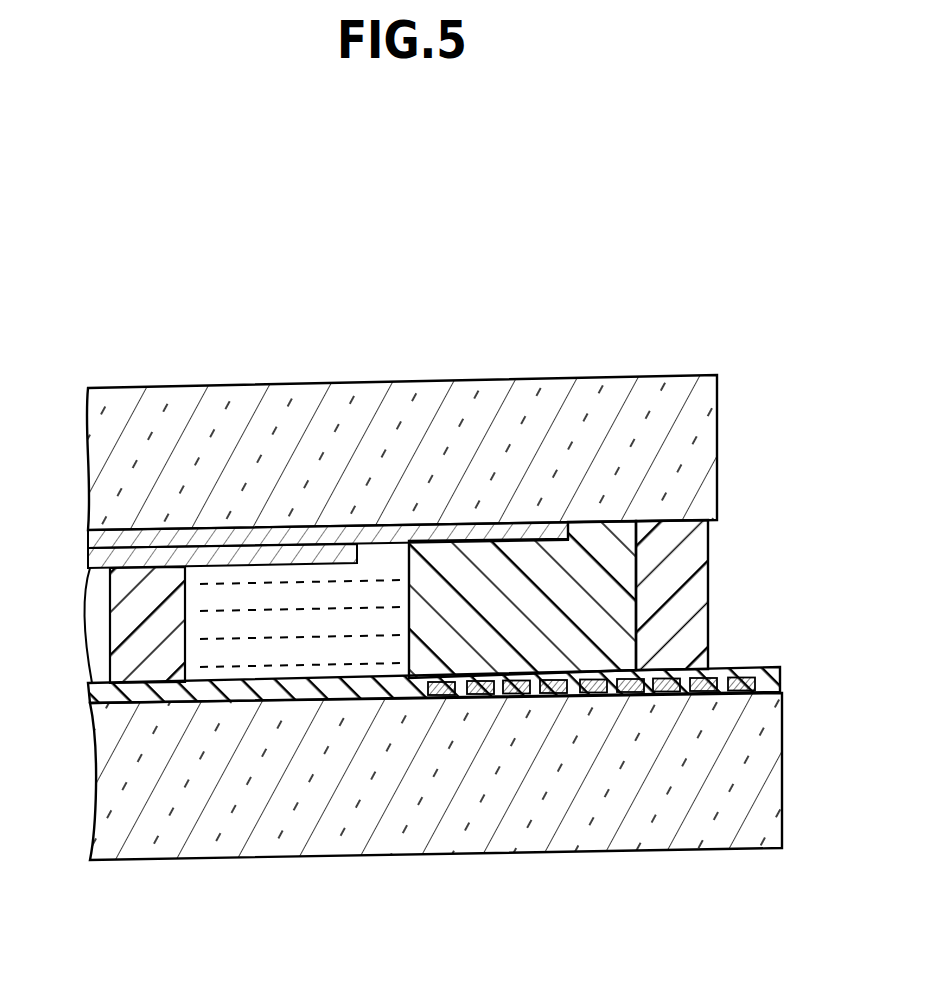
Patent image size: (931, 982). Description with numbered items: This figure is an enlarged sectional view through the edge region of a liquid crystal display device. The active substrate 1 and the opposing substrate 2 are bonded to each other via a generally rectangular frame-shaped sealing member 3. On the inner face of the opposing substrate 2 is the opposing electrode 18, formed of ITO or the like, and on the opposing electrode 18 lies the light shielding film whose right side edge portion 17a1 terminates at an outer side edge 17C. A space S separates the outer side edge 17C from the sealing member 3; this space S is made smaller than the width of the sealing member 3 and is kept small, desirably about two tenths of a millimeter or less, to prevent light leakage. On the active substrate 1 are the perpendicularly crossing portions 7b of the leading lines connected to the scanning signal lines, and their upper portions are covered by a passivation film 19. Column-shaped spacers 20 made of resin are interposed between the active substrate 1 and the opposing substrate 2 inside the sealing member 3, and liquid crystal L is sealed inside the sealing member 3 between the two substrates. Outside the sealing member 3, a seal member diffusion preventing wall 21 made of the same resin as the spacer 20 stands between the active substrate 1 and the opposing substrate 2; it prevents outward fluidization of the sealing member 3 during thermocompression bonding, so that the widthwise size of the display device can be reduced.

The active substrate 1 is at (672, 822).
The opposing substrate 2 is at (517, 410).
The sealing member 3 is at (540, 650).
The perpendicularly crossing portions 7b is at (478, 700).
The right side edge portion 17a1 is at (215, 557).
The outer side edge 17C is at (357, 563).
The opposing electrode 18 is at (142, 543).
The passivation film 19 is at (348, 703).
The column-shaped spacers 20 is at (133, 622).
The seal member diffusion preventing wall 21 is at (705, 590).
The liquid crystal L is at (268, 657).
The space S is at (404, 545).